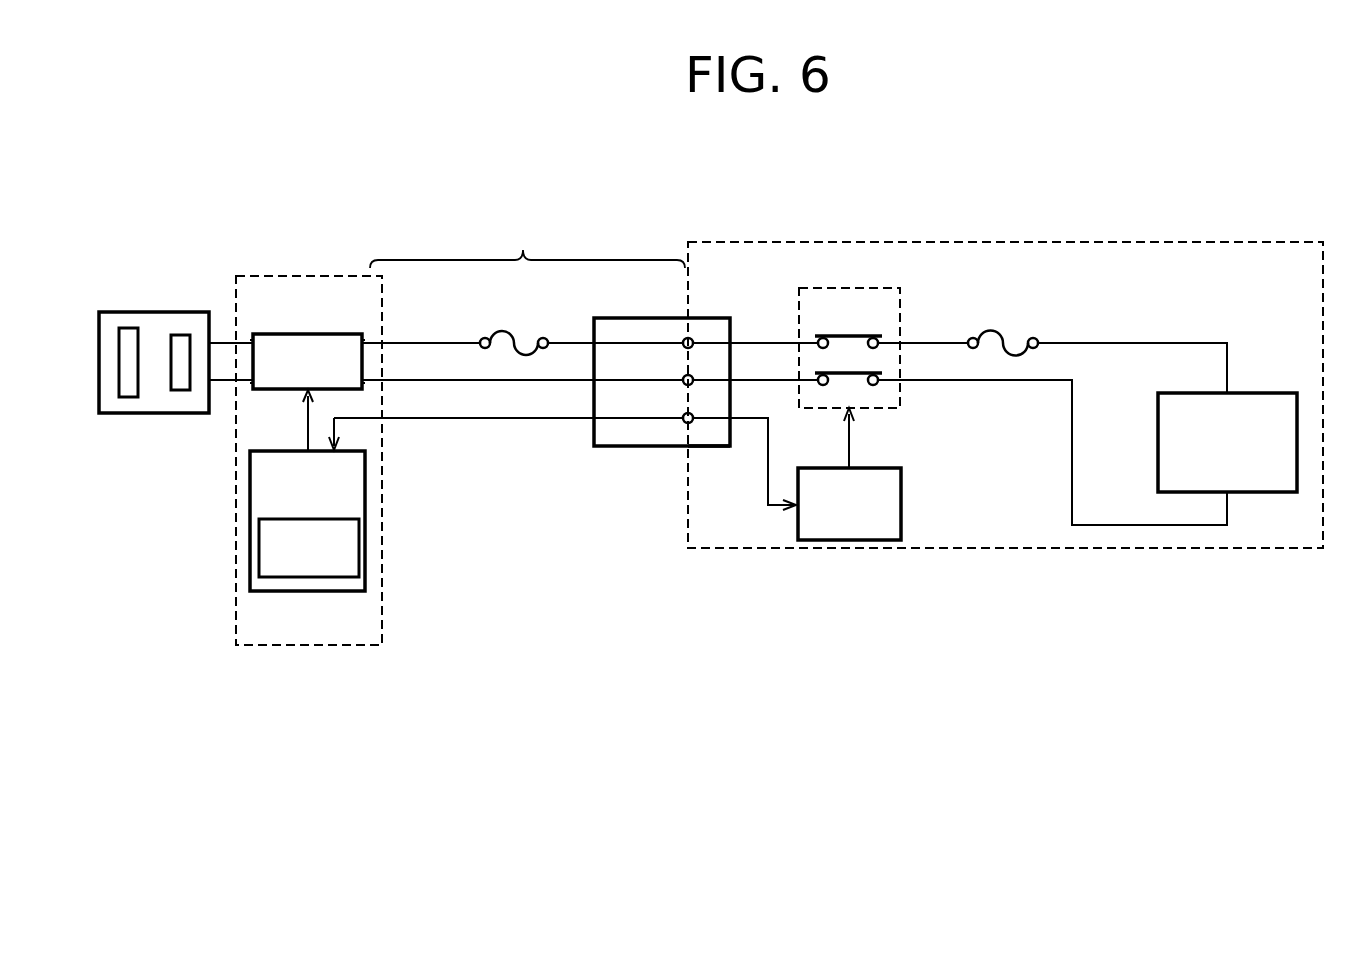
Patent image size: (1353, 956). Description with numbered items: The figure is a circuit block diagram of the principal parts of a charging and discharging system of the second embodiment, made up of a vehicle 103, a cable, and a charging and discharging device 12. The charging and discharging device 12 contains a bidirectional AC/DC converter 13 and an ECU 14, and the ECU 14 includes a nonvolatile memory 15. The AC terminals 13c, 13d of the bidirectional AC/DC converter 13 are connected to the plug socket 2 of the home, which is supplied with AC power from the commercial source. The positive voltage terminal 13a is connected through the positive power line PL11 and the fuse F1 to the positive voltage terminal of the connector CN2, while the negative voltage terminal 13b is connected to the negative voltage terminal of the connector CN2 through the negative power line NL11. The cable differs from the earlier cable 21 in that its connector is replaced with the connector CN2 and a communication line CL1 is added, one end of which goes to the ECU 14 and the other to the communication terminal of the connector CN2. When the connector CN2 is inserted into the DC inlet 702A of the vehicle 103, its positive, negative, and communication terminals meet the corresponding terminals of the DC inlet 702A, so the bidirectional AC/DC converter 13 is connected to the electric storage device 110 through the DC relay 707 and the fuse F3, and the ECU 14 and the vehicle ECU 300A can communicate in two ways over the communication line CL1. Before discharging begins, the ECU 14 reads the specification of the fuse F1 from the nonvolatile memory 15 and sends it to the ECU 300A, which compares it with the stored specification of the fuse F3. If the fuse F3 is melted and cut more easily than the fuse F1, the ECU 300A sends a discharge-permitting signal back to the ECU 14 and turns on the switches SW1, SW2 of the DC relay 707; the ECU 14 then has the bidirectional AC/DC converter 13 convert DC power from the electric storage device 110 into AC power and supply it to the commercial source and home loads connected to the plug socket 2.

The plug socket 2 is at (167, 310).
The charging and discharging device 12 is at (313, 273).
The bidirectional AC/DC converter 13 is at (310, 333).
The positive voltage terminal 13a is at (363, 337).
The negative voltage terminal 13b is at (367, 384).
The AC terminal 13c is at (252, 336).
The AC terminal 13d is at (247, 389).
The ECU 14 is at (307, 518).
The nonvolatile memory 15 is at (322, 578).
The cable 21 is at (527, 244).
The positive power line PL11 is at (430, 342).
The negative power line NL11 is at (503, 382).
The communication line CL1 is at (432, 420).
The fuse F1 is at (500, 325).
The connector CN2 is at (640, 447).
The DC inlet 702A is at (715, 447).
The vehicle 103 is at (1163, 242).
The DC relay 707 is at (869, 349).
The switch SW1 is at (850, 335).
The switch SW2 is at (850, 375).
The fuse F3 is at (992, 327).
The ECU 300A is at (901, 507).
The electric storage device 110 is at (1260, 393).